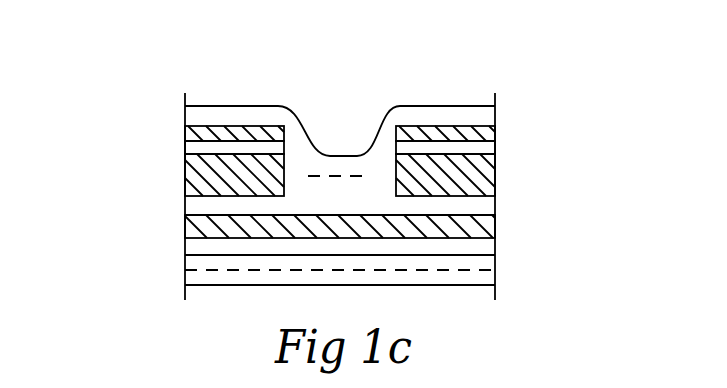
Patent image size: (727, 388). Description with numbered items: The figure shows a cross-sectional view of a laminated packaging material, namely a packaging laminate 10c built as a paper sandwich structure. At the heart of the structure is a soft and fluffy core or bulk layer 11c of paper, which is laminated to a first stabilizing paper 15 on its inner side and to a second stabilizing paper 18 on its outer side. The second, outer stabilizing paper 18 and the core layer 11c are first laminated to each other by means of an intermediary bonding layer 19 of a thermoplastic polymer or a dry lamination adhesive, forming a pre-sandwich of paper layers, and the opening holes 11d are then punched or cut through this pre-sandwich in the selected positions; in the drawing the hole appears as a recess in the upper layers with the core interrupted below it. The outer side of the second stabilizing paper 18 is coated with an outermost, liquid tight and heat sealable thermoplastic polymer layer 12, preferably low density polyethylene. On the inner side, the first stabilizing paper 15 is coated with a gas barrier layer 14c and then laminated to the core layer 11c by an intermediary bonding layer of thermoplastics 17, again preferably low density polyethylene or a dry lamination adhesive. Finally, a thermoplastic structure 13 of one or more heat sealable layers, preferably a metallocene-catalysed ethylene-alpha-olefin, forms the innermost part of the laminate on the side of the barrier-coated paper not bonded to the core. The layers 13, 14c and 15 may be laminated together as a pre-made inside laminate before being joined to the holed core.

The packaging laminate 10c is at (278, 196).
The core or bulk layer 11c is at (493, 177).
The opening holes 11d is at (377, 156).
The outermost thermoplastic polymer layer 12 is at (487, 113).
The thermoplastic structure 13 is at (485, 276).
The gas barrier layer 14c is at (483, 247).
The first stabilizing paper 15 is at (490, 223).
The intermediary bonding layer of thermoplastics 17 is at (487, 205).
The second stabilizing paper 18 is at (487, 132).
The intermediary bonding layer 19 is at (487, 149).